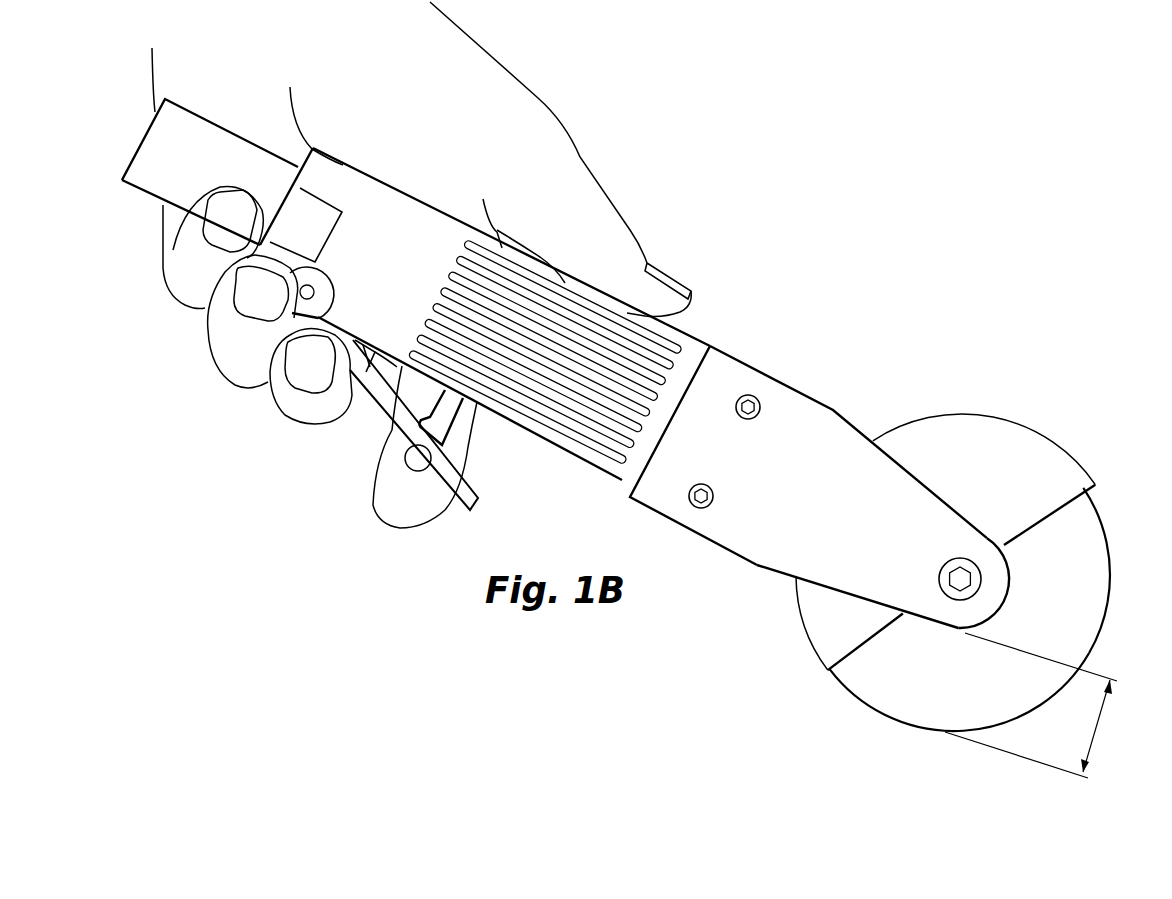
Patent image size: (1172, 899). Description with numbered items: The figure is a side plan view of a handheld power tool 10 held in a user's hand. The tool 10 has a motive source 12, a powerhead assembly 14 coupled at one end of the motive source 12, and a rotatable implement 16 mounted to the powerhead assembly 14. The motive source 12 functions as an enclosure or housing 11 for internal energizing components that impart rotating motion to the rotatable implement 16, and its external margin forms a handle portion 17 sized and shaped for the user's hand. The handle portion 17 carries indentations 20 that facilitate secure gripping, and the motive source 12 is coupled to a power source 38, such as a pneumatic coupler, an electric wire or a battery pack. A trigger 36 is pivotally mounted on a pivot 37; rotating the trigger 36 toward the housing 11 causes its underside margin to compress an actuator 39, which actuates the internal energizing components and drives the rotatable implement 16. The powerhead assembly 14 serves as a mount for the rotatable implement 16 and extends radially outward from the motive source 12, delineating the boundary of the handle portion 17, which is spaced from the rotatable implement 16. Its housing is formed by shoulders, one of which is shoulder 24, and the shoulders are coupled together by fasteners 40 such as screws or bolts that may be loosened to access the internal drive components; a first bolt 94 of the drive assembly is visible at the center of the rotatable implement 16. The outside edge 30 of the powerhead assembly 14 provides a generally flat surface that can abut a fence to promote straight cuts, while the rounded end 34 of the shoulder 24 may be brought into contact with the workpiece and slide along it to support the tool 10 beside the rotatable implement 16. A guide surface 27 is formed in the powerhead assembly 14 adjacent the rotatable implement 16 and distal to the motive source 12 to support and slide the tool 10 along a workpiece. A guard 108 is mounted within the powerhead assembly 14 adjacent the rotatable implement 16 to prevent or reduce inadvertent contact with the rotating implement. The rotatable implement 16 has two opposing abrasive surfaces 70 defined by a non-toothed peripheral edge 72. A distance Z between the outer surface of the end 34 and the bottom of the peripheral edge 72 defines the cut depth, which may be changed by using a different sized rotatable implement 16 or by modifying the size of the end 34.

The handheld power tool 10 is at (719, 313).
The housing 11 is at (532, 398).
The motive source 12 is at (580, 457).
The powerhead assembly 14 is at (750, 537).
The rotatable implement 16 is at (1113, 550).
The handle portion 17 is at (410, 203).
The indentations 20 is at (575, 307).
The shoulder 24 is at (808, 423).
The guide surface 27 is at (835, 600).
The outside edge 30 is at (927, 517).
The end 34 is at (997, 597).
The trigger 36 is at (485, 489).
The pivot 37 is at (314, 288).
The power source 38 is at (150, 200).
The actuator 39 is at (363, 343).
The fasteners 40 is at (752, 395).
The abrasive surfaces 70 is at (1085, 618).
The peripheral edge 72 is at (1113, 587).
The first bolt 94 is at (978, 562).
The guard 108 is at (958, 415).
The distance Z is at (1097, 727).